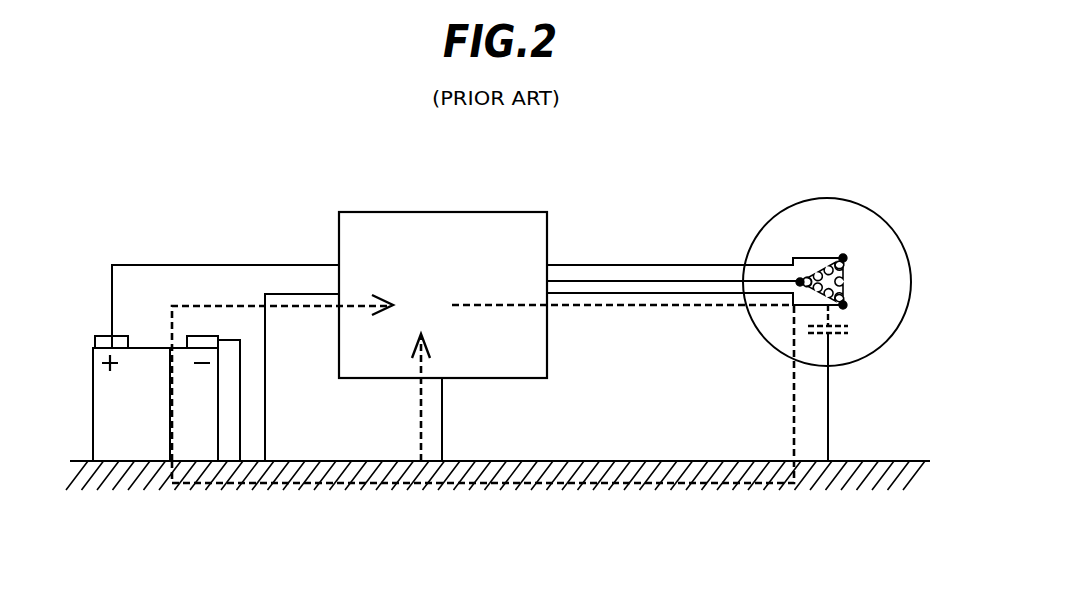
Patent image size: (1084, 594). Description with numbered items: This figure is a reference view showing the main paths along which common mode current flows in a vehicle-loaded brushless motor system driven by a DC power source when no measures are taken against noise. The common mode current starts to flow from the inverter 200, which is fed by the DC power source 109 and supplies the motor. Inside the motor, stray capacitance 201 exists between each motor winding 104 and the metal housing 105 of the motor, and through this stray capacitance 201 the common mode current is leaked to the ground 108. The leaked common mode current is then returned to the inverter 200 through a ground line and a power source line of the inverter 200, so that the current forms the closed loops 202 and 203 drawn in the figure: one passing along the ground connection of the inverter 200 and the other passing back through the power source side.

The motor winding 104 is at (818, 256).
The metal housing 105 is at (763, 225).
The ground 108 is at (858, 475).
The battery 109 is at (149, 347).
The inverter 200 is at (445, 212).
The stray capacitance 201 is at (838, 334).
The loop 202 is at (412, 445).
The loop 203 is at (168, 443).